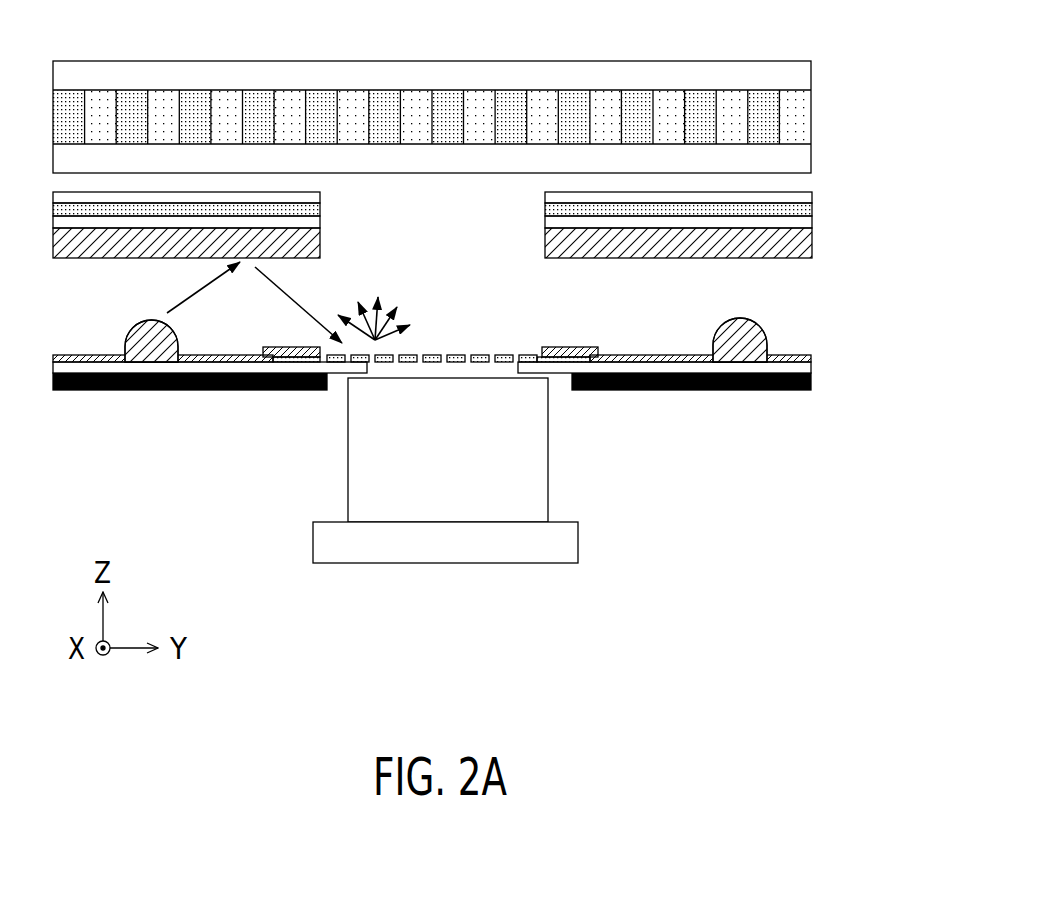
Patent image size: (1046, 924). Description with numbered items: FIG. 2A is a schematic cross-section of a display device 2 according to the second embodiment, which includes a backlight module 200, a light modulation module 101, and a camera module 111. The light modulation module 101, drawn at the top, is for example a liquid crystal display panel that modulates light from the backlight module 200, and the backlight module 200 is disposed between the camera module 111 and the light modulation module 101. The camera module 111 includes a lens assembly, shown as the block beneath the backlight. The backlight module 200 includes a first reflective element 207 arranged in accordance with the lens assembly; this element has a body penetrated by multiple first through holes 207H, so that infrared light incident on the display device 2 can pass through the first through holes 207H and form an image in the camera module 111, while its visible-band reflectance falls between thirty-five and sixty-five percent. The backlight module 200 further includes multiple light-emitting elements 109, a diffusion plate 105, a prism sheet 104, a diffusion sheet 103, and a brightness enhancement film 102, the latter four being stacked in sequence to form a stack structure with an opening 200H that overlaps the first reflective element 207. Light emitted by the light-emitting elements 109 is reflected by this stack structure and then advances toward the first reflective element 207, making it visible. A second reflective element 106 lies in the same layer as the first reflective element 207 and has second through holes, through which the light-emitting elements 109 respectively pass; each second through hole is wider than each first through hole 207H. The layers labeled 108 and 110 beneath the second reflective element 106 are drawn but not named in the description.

The display device 2 is at (781, 560).
The light modulation module 101 is at (824, 61).
The brightness enhancement film 102 is at (797, 196).
The diffusion sheet 103 is at (797, 210).
The prism sheet 104 is at (797, 222).
The diffusion plate 105 is at (797, 243).
The second reflective element 106 is at (805, 357).
The substrate 108 is at (800, 368).
The light-emitting elements 109 is at (132, 335).
The light blocking layer 110 is at (805, 383).
The camera module 111 is at (358, 466).
The backlight module 200 is at (891, 163).
The opening 200H is at (447, 208).
The first reflective element 207 is at (524, 353).
The first through holes 207H is at (466, 354).